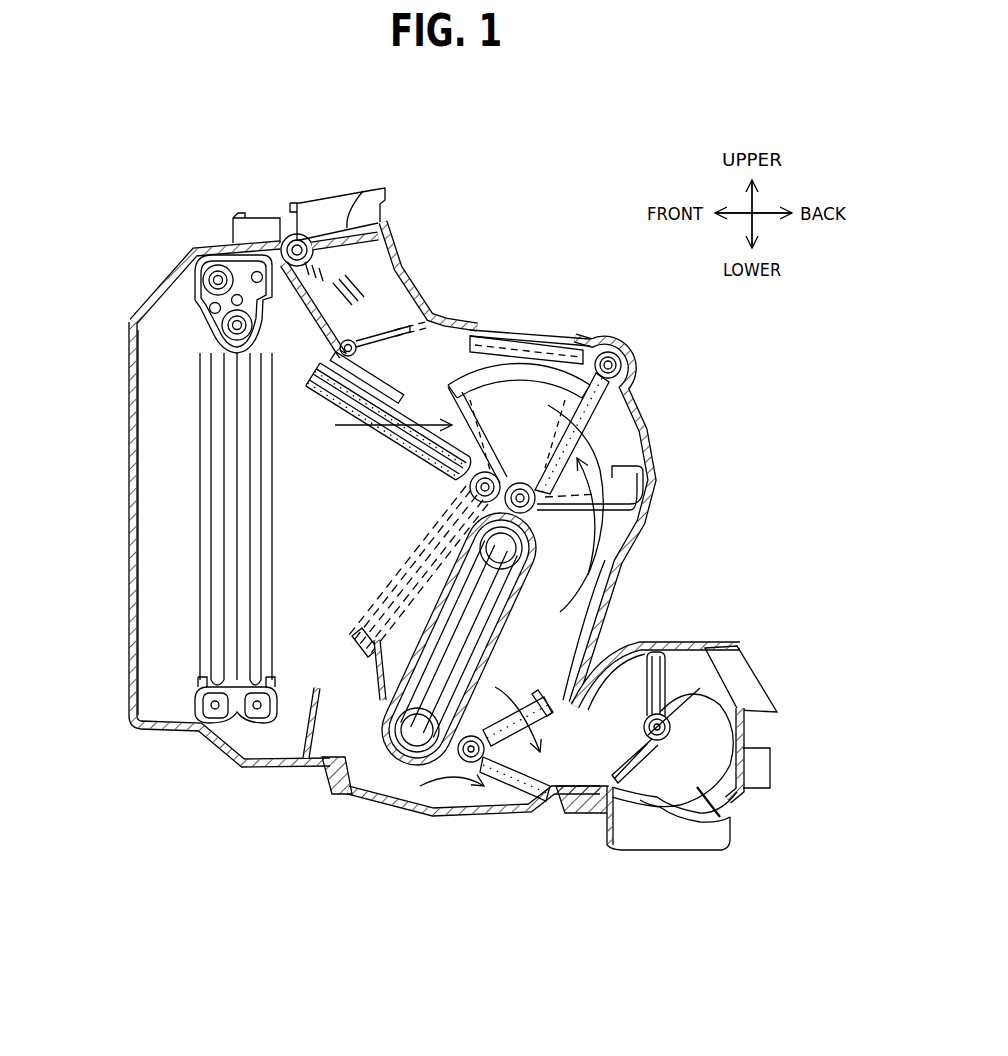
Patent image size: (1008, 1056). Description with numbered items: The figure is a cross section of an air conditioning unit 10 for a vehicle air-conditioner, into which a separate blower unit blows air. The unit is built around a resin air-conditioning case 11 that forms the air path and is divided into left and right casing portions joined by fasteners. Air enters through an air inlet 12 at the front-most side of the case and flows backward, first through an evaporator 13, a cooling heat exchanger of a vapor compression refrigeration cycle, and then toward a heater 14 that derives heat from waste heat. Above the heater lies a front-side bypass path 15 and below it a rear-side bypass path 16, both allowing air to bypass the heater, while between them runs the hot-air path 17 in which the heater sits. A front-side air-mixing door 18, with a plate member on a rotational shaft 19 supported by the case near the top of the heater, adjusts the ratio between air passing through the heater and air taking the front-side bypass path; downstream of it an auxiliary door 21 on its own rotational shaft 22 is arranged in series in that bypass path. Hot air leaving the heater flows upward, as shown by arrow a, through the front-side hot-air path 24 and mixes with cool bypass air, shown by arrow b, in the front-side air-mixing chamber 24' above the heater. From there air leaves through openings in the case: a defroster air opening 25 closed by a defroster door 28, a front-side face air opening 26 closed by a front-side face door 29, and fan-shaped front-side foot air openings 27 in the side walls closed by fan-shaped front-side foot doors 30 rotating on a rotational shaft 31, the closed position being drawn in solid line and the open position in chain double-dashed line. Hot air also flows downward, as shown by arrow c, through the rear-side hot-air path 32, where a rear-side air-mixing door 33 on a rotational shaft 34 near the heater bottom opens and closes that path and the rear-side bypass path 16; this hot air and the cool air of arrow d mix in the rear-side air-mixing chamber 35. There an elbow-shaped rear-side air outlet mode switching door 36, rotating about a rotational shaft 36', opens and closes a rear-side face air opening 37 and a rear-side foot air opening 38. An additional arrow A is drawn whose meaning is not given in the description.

The air conditioning unit 10 is at (253, 208).
The air-conditioning case 11 is at (166, 310).
The air inlet 12 is at (163, 473).
The evaporator 13 is at (227, 437).
The heater 14 is at (642, 551).
The front-side bypass path 15 is at (413, 408).
The rear-side bypass path 16 is at (397, 777).
The hot-air path 17 is at (373, 610).
The front-side air-mixing door 18 is at (470, 487).
The rotational shaft 19 is at (457, 493).
The auxiliary door 21 is at (400, 370).
The rotational shaft 22 is at (352, 343).
The front-side hot-air path 24 is at (662, 516).
The front-side air-mixing chamber 24' is at (637, 508).
The defroster air opening 25 is at (322, 208).
The front-side face air opening 26 is at (605, 340).
The front-side foot air opening 27 is at (502, 374).
The defroster door 28 is at (352, 228).
The front-side face door 29 is at (583, 333).
The front-side foot door 30 is at (477, 375).
The rotational shaft 31 is at (615, 397).
The rear-side hot-air path 32 is at (490, 605).
The rear-side air-mixing door 33 is at (520, 800).
The rotational shaft 34 is at (450, 767).
The rear-side air-mixing chamber 35 is at (572, 750).
The rear-side air outlet mode switching door 36 is at (667, 693).
The rotational shaft 36' is at (739, 697).
The rear-side face air opening 37 is at (737, 660).
The rear-side foot air opening 38 is at (710, 836).
The arrow a is at (598, 480).
The arrow b is at (357, 428).
The arrow c is at (580, 660).
The arrow d is at (470, 805).
The air flow A is at (428, 372).